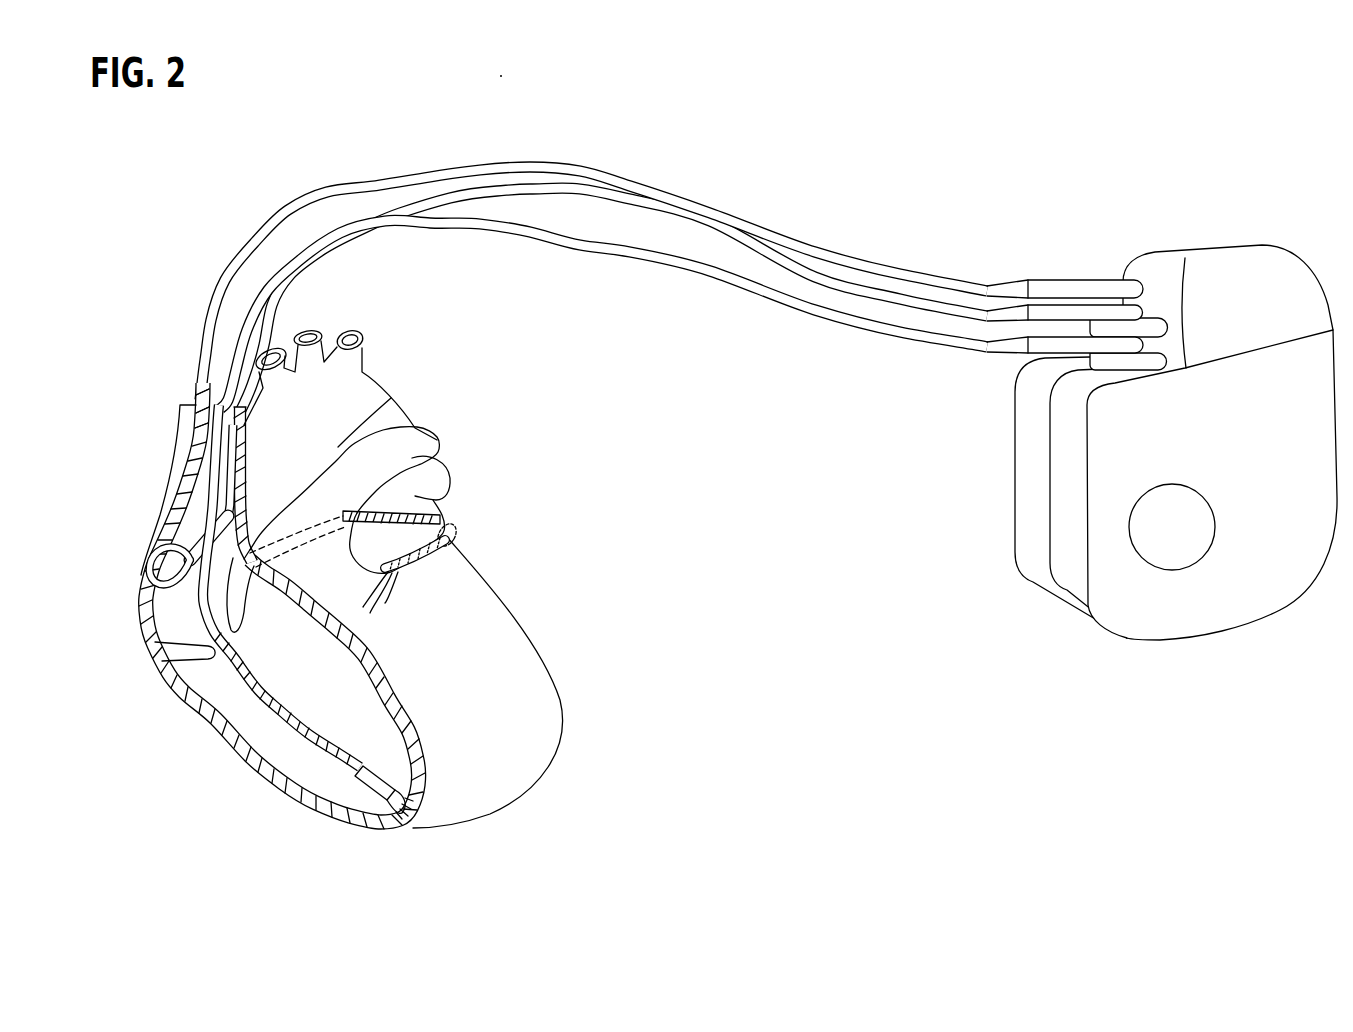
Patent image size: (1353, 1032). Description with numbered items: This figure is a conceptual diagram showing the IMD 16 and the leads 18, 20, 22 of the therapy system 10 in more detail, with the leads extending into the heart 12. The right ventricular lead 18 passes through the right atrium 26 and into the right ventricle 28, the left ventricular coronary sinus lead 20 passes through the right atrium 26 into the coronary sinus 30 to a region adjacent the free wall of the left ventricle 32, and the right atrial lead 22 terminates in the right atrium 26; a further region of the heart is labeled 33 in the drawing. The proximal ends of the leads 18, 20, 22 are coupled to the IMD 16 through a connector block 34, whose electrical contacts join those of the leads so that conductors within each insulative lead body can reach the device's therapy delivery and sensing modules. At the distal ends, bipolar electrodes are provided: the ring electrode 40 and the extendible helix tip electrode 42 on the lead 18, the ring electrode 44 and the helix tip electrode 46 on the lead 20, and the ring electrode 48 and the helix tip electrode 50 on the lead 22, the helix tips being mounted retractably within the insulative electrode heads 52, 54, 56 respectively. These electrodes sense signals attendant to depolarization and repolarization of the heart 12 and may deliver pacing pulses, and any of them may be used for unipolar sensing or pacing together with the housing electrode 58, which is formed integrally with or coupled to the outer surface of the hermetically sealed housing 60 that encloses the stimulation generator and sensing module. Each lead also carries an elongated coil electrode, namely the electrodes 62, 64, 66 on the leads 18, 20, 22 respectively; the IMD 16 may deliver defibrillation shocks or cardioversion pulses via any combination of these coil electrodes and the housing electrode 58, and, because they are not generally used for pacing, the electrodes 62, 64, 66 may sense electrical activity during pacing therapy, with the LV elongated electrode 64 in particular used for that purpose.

The therapy system 10 is at (708, 498).
The heart 12 is at (363, 609).
The IMD 16 is at (1146, 431).
The right ventricular lead 18 is at (623, 361).
The left ventricular coronary sinus lead 20 is at (815, 237).
The right atrial lead 22 is at (901, 290).
The right atrium 26 is at (172, 612).
The right ventricle 28 is at (215, 707).
The coronary sinus 30 is at (319, 518).
The left ventricle 32 is at (540, 688).
The left atrium 33 is at (343, 440).
The connector block 34 is at (1222, 265).
The ring electrode 40 is at (348, 770).
The extendible helix tip electrode 42 is at (405, 814).
The ring electrode 44 is at (465, 548).
The extendible helix tip electrode 46 is at (398, 578).
The ring electrode 48 is at (150, 567).
The extendible helix tip electrode 50 is at (243, 503).
The insulative electrode head 52 is at (372, 795).
The insulative electrode head 54 is at (423, 570).
The insulative electrode head 56 is at (197, 540).
The housing electrode 58 is at (1180, 532).
The housing 60 is at (1133, 623).
The elongated electrode 62 is at (275, 715).
The elongated electrode 64 is at (442, 510).
The elongated electrode 66 is at (192, 436).